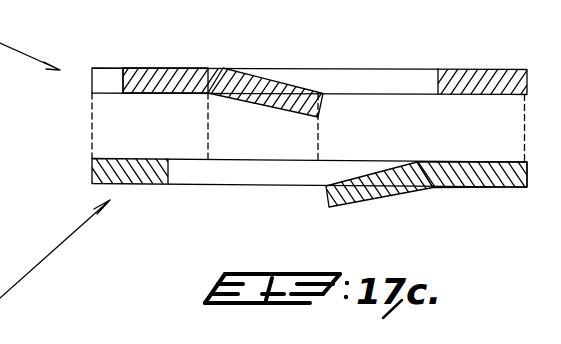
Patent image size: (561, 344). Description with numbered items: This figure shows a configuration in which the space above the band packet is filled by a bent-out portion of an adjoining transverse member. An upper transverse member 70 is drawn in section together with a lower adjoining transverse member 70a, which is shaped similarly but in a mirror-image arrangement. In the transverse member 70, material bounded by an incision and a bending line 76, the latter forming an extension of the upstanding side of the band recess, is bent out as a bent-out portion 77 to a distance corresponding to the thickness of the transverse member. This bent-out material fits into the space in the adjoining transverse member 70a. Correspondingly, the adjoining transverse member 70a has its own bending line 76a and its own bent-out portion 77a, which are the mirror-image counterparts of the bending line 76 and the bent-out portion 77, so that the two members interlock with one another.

The transverse member 70 is at (490, 70).
The adjoining transverse member 70a is at (520, 188).
The bending line 76 is at (205, 93).
The bent-out portion 77 is at (258, 95).
The bending line of adjoining transverse member 76a is at (436, 190).
The bent-out portion of adjoining transverse member 77a is at (383, 190).